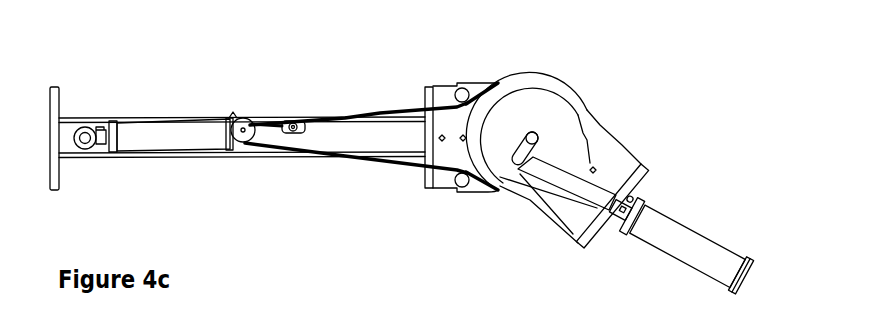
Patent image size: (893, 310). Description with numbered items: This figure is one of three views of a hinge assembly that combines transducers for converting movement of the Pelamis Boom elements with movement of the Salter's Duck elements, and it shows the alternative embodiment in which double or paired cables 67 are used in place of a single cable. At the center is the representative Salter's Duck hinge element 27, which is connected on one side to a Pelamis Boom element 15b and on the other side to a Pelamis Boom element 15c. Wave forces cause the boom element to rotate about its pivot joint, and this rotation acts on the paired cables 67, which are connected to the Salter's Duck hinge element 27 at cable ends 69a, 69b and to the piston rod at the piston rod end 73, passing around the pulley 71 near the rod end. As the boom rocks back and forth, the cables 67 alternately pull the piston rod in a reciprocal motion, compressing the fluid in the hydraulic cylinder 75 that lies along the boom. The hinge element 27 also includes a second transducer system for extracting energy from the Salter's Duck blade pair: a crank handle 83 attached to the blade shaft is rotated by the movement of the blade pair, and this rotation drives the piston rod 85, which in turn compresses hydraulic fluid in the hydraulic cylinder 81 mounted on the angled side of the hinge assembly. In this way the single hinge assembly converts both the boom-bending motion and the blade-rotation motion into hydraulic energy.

The Pelamis Boom element 15b is at (130, 168).
The Pelamis Boom element 15c is at (762, 255).
The Salter's Duck hinge element 27 is at (550, 105).
The cable 67 is at (320, 157).
The cable end 69a is at (492, 189).
The cable end 69b is at (498, 83).
The pulley 71 is at (241, 133).
The piston rod end 73 is at (268, 142).
The hydraulic cylinder 75 is at (172, 133).
The hydraulic cylinder 81 is at (682, 245).
The crank handle 83 is at (522, 168).
The piston rod 85 is at (548, 177).